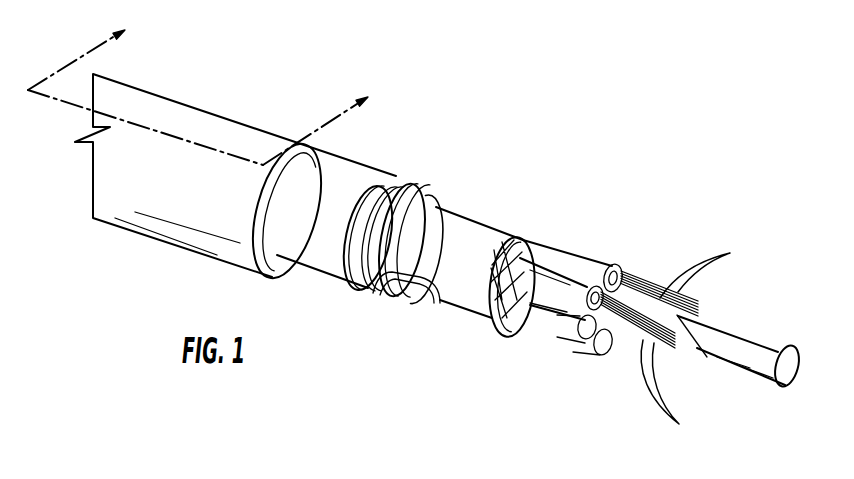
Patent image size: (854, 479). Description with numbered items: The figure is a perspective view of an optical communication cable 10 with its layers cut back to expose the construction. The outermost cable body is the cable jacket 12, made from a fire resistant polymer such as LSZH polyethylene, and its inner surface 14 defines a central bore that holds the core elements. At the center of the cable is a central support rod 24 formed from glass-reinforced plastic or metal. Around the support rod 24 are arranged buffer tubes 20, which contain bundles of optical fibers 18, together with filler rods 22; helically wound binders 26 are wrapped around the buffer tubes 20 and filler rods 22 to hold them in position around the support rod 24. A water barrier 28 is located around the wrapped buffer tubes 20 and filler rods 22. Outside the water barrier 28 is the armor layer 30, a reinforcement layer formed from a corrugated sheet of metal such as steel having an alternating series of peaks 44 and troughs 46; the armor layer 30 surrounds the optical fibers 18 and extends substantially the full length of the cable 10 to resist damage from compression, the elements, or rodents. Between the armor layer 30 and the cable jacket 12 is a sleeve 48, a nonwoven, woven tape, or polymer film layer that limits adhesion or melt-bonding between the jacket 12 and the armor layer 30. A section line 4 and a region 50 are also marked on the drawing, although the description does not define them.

The section line 4- 4 is at (206, 88).
The cable 10 is at (476, 116).
The cable jacket 12 is at (262, 139).
The inner surface 14 is at (272, 234).
The optical fibers 18 is at (727, 254).
The buffer tubes 20 is at (550, 262).
The filler rods 22 is at (580, 325).
The central support rod 24 is at (790, 362).
The helically wound binders 26 is at (523, 320).
The water barrier 28 is at (473, 232).
The armor layer 30 is at (397, 187).
The peaks 44 is at (433, 198).
The troughs 46 is at (374, 283).
The sleeve 48 is at (357, 177).
The jacket end / strain relief 50 is at (313, 170).